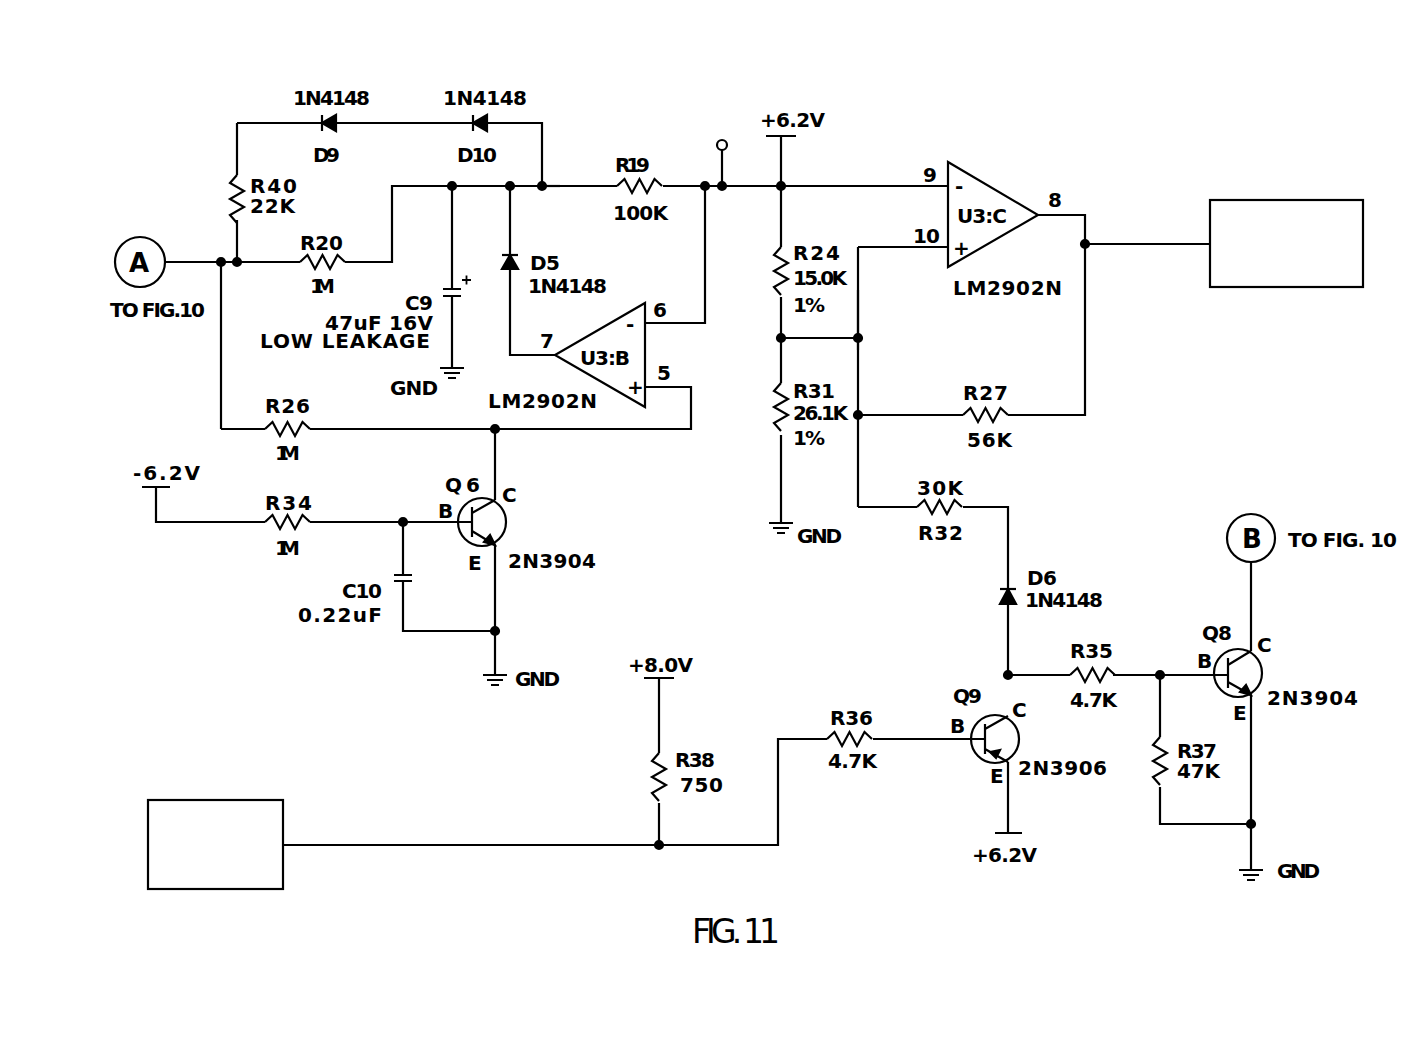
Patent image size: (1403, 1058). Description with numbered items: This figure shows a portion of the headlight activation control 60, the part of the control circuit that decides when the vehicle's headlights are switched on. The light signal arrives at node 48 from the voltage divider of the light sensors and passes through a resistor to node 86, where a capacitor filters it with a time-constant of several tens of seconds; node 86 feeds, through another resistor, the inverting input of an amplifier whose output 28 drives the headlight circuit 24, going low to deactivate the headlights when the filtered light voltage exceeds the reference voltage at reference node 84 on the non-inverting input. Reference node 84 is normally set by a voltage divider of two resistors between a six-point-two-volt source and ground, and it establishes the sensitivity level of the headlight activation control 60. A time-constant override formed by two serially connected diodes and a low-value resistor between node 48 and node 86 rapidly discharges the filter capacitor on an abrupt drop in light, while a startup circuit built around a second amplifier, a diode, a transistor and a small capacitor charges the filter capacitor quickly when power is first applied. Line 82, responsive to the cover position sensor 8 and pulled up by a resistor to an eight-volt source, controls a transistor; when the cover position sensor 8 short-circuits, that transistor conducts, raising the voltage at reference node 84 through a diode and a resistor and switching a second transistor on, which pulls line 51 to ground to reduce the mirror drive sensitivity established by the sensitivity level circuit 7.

The sensitivity level circuit 7 is at (719, 148).
The cover position sensor 8 is at (225, 798).
The headlight activation circuit 24 is at (1268, 200).
The output signal 28 is at (1128, 243).
The node 48 is at (240, 345).
The sensitivity input line 51 is at (1251, 593).
The headlight activation control 60 is at (687, 525).
The line 82 is at (455, 845).
The reference node 84 is at (858, 306).
The node 86 is at (553, 183).